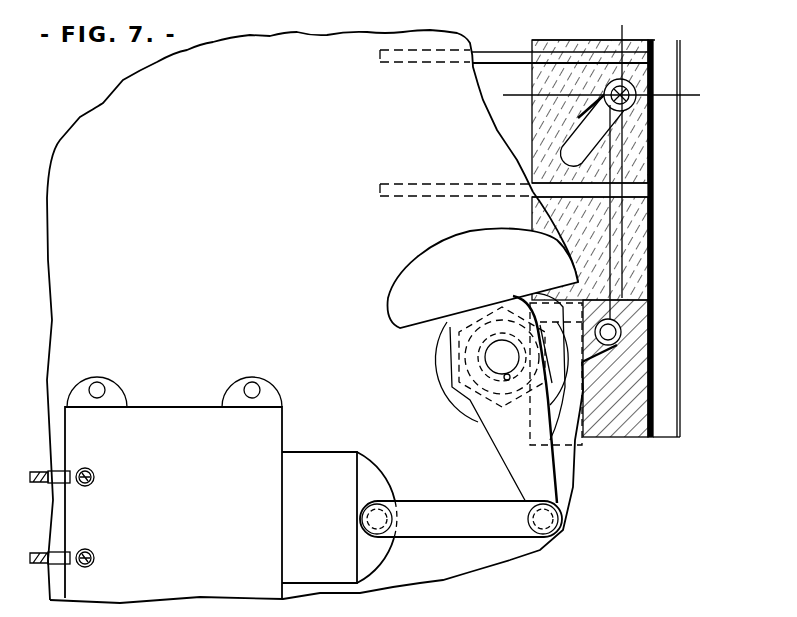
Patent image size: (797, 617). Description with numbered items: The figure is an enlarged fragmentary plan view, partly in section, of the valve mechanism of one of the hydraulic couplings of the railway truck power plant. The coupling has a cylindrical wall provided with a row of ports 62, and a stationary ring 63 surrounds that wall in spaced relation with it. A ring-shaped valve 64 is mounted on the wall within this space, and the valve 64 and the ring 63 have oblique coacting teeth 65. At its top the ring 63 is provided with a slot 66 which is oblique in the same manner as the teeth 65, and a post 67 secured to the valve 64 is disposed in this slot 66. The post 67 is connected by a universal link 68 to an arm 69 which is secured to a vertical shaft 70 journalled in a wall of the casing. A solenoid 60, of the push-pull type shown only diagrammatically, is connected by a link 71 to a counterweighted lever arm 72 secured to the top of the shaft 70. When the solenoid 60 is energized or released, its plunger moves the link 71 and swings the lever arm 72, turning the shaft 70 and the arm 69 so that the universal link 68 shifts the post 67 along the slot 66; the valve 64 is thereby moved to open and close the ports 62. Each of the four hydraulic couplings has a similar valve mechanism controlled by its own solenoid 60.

The solenoid 60 is at (212, 487).
The ports 62 is at (640, 255).
The stationary ring 63 is at (532, 42).
The ring-shaped valve 64 is at (627, 437).
The oblique coacting teeth 65 is at (640, 78).
The slot 66 is at (580, 108).
The post 67 is at (636, 103).
The universal link 68 is at (630, 228).
The arm 69 is at (568, 369).
The vertical shaft 70 is at (502, 357).
The link 71 is at (452, 508).
The counterweighted lever arm 72 is at (495, 441).